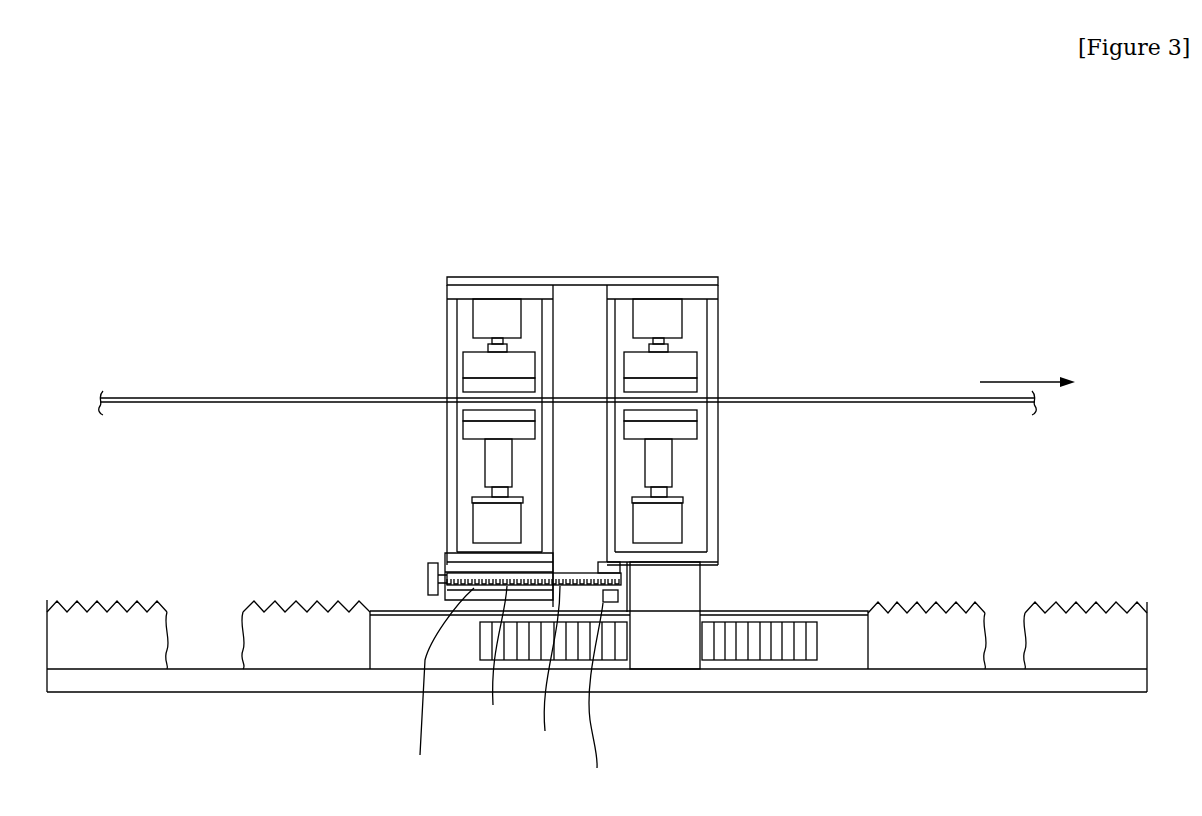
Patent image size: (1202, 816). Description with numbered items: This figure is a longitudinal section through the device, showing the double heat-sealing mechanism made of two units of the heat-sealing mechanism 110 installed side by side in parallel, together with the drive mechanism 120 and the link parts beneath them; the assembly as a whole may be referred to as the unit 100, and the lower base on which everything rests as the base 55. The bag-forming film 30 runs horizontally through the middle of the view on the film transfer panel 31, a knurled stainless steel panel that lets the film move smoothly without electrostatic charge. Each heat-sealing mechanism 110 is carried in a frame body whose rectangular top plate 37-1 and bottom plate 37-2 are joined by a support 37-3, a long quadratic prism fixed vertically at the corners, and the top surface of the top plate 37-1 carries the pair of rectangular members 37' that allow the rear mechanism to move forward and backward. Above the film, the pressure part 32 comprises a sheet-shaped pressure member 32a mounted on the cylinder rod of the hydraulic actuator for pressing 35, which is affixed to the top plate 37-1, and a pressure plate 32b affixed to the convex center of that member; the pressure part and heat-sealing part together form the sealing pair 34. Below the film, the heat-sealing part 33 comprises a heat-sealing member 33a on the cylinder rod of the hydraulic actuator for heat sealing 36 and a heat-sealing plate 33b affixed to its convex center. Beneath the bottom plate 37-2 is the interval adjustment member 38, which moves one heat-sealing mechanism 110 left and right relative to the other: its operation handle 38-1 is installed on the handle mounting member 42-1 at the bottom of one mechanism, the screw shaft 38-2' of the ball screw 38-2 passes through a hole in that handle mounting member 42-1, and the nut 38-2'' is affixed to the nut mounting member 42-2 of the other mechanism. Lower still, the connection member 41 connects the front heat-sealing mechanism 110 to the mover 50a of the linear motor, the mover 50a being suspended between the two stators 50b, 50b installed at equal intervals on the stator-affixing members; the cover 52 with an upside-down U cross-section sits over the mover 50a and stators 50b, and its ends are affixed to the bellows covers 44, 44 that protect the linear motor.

The roller pressing unit 100 is at (587, 384).
The heat-sealing mechanism 110 is at (529, 609).
The drive mechanism 120 is at (619, 696).
The bag-forming film 30 is at (900, 399).
The film transfer panel 31 is at (885, 403).
The pressure part 32 is at (584, 327).
The sheet-shaped pressure member 32a is at (465, 355).
The pressure plate 32b is at (470, 384).
The heat-sealing part 33 is at (584, 415).
The heat-sealing member 33a is at (490, 450).
The heat-sealing plate 33b is at (470, 414).
The roller pair 34 is at (587, 379).
The hydraulic actuator for pressing 35 is at (497, 305).
The hydraulic actuator for heat sealing 36 is at (485, 522).
The top plate 37-1 is at (445, 297).
The bottom plate 37-2 is at (452, 556).
The support 37-3 is at (455, 293).
The rectangular member 37' is at (599, 410).
The interval adjustment member 38 is at (456, 584).
The operation handle 38-1 is at (428, 578).
The ball screw 38-2 is at (474, 587).
The screw shaft 38-2' is at (490, 659).
The nut 38-2'' is at (531, 671).
The connection member 41 is at (685, 580).
The handle mounting member 42-1 is at (428, 684).
The nut mounting member 42-2 is at (587, 699).
The bellows cover 44 is at (108, 598).
The mover 50a is at (683, 647).
The stator 50b is at (763, 636).
The cover 52 is at (657, 616).
The base plate 55 is at (597, 644).